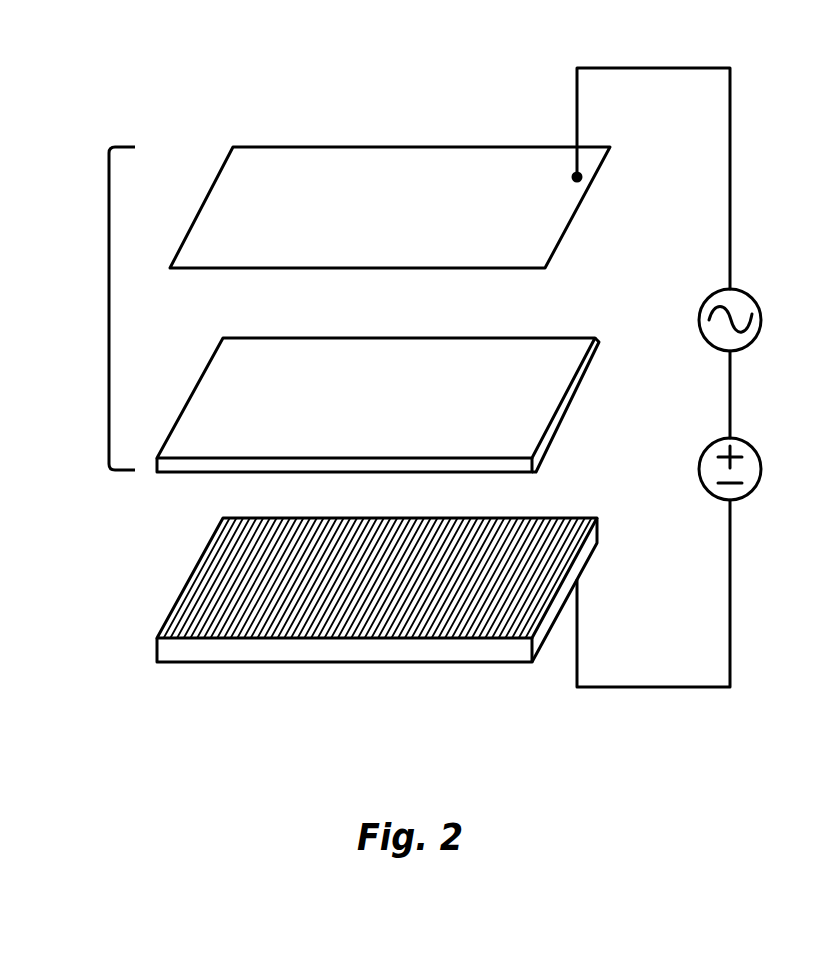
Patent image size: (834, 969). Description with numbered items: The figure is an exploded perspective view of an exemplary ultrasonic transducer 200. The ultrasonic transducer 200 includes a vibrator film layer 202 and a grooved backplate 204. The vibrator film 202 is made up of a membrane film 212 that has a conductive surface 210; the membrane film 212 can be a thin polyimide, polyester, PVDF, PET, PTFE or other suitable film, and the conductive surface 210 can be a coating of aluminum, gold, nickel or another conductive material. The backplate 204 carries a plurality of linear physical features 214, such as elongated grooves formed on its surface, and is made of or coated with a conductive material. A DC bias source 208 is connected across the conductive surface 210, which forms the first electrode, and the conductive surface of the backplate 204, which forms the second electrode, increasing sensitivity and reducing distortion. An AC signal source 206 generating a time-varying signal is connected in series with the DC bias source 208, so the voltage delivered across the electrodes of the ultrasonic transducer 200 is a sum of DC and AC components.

The ultrasonic transducer 200 is at (186, 66).
The vibrator film layer 202 is at (109, 308).
The backplate 204 is at (152, 650).
The AC signal source 206 is at (770, 288).
The DC bias source 208 is at (770, 437).
The conductive surface 210 is at (390, 207).
The membrane film 212 is at (378, 405).
The linear physical features 214 is at (202, 520).